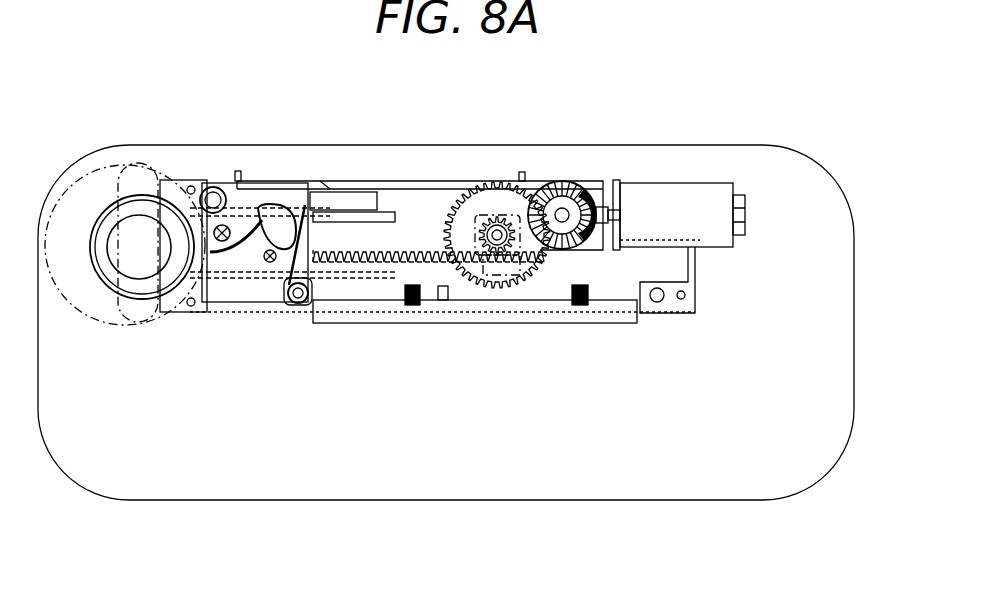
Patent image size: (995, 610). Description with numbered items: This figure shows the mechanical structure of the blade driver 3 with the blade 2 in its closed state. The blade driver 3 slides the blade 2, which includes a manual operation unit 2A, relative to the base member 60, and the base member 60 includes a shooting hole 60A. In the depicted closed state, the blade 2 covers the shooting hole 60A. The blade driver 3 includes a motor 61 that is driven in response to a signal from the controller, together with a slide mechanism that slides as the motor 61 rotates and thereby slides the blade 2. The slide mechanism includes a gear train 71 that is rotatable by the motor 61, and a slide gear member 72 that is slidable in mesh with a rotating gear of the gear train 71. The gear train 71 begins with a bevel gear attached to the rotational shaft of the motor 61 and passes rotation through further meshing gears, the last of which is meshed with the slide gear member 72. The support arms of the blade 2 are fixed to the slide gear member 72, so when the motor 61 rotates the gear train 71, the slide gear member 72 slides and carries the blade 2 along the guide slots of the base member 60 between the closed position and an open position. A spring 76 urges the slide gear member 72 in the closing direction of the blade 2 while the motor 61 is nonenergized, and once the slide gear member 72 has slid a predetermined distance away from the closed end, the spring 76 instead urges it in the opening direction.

The blade 2 is at (70, 178).
The manual operation unit 2A is at (140, 178).
The blade driver 3 is at (756, 99).
The base member 60 is at (712, 500).
The shooting hole 60A is at (110, 255).
The motor 61 is at (683, 190).
The gear train 71 is at (607, 162).
The slide gear member 72 is at (355, 300).
The spring 76 is at (262, 235).